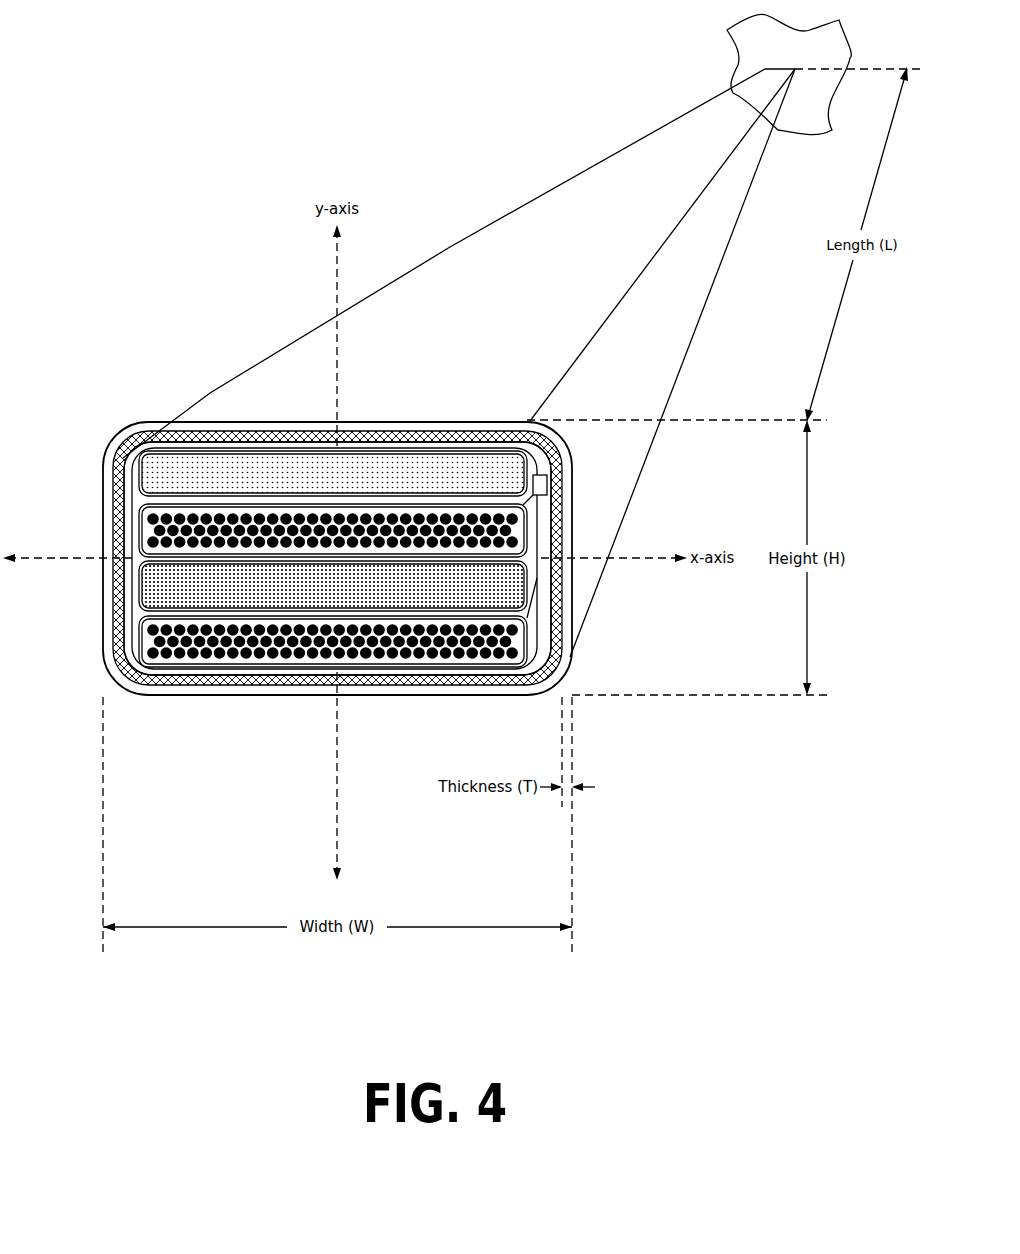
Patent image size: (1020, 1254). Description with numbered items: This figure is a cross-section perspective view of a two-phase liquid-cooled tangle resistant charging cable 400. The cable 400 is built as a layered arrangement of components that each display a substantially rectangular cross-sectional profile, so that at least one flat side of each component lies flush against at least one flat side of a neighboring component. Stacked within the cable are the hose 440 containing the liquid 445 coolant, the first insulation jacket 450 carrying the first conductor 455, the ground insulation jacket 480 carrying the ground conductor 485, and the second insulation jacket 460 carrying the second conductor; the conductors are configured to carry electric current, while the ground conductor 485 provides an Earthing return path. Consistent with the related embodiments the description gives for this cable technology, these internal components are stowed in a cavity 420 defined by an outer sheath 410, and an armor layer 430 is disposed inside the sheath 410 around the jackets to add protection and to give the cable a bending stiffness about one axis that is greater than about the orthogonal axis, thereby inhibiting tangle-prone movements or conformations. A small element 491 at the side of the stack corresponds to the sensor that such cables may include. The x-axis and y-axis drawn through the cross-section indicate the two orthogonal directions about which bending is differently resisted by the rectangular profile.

The LCTR charging cable 400 is at (175, 243).
The outer housing 410 is at (163, 425).
The inner casing 420 is at (137, 499).
The insulating layer 430 is at (142, 442).
The thermal barrier layer 440 is at (123, 458).
The liquid 445 is at (155, 482).
The first insulation jacket 450 is at (150, 518).
The first conductor 455 is at (150, 540).
The second insulation jacket 460 is at (147, 638).
The ground insulation jacket 480 is at (147, 577).
The ground conductor 485 is at (153, 597).
The terminal tab 491 is at (548, 475).